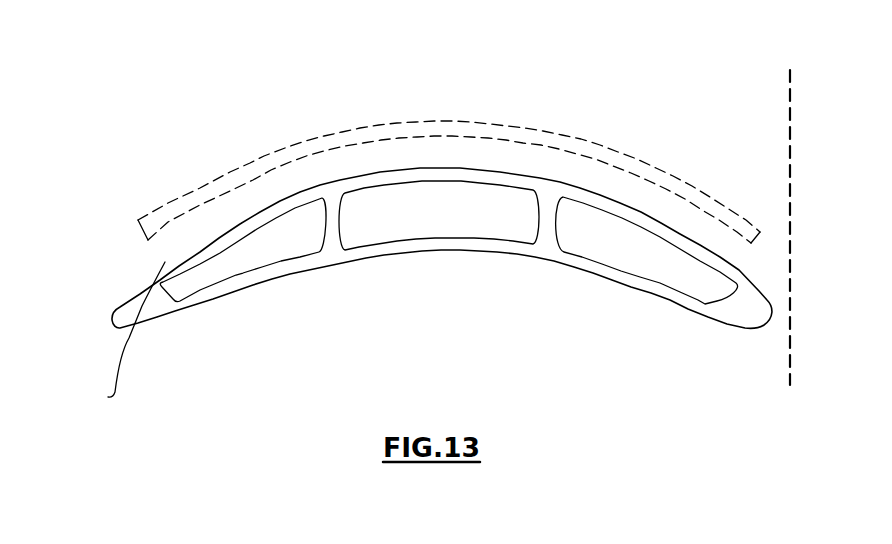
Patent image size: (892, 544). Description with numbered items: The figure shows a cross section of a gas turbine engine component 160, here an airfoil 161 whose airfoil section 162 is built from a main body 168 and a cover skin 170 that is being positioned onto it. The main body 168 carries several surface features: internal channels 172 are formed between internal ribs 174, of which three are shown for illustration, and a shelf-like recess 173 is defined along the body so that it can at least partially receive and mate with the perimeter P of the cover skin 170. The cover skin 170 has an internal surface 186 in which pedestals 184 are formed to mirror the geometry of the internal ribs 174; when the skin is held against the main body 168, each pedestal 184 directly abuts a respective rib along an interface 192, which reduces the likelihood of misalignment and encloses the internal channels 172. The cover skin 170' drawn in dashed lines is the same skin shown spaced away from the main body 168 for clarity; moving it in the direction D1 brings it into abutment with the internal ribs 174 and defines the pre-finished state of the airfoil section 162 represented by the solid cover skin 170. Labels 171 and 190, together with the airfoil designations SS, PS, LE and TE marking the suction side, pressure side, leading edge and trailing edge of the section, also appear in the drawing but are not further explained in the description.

The component 160 is at (200, 136).
The airfoil 161 is at (136, 42).
The airfoil section 162 is at (108, 300).
The main body 168 is at (178, 313).
The cover skin 170 is at (426, 209).
The cover skin 170' is at (428, 176).
The airfoil wall 171 is at (215, 238).
The internal channels 172 is at (239, 272).
The recess 173 is at (161, 282).
The internal ribs 174 is at (326, 240).
The pedestals 184 is at (307, 207).
The internal surface 186 is at (648, 238).
The trailing edge region 190 is at (710, 250).
The interface 192 is at (355, 210).
The direction D1 is at (443, 159).
The suction side SS is at (160, 283).
The pressure side PS is at (392, 255).
The leading edge LE is at (112, 326).
The trailing edge TE is at (773, 319).
The perimeter P is at (129, 338).